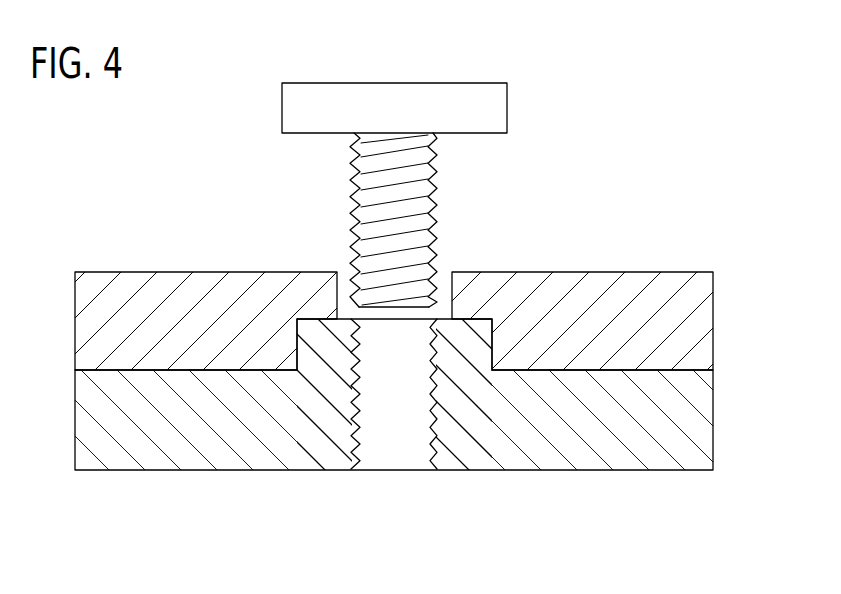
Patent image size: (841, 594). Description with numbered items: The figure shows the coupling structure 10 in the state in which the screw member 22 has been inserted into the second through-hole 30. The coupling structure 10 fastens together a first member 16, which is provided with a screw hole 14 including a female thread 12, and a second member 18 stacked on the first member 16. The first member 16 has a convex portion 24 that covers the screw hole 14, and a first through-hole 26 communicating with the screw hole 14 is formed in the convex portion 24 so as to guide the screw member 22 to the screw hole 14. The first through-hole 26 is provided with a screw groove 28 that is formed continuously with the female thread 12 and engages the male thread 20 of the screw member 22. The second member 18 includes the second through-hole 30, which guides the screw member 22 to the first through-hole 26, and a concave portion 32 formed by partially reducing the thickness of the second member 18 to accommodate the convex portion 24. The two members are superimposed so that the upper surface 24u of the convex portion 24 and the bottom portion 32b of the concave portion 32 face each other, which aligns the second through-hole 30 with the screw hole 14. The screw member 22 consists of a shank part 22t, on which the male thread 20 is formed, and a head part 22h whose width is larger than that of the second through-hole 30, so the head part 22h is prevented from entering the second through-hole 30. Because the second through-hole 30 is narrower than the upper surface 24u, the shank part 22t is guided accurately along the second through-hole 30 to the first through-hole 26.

The coupling structure 10 is at (128, 258).
The female thread 12 is at (357, 453).
The screw hole 14 is at (387, 460).
The first member 16 is at (73, 396).
The second member 18 is at (73, 295).
The male thread 20 is at (388, 195).
The screw member 22 is at (510, 98).
The head part 22h is at (282, 107).
The shank part 22t is at (352, 176).
The convex portion 24 is at (414, 368).
The upper surface 24u is at (320, 316).
The first through-hole 26 is at (405, 339).
The screw groove 28 is at (358, 355).
The second through-hole 30 is at (444, 284).
The concave portion 32 is at (307, 322).
The bottom portion 32b is at (481, 322).